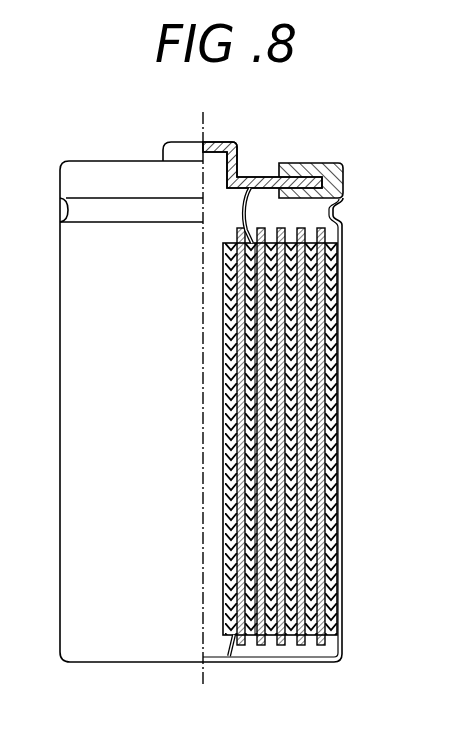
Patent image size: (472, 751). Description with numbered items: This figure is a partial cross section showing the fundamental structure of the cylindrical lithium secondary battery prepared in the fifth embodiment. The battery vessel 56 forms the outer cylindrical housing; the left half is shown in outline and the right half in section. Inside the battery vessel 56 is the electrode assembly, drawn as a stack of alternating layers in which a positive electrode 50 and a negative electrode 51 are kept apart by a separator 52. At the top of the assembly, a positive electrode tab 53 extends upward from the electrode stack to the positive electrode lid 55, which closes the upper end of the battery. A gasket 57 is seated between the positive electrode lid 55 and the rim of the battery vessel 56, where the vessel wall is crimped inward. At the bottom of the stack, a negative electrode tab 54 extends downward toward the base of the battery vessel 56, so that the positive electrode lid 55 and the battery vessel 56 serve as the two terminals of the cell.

The positive electrode 50 is at (291, 640).
The negative electrode 51 is at (313, 640).
The separator 52 is at (255, 645).
The positive electrode tab 53 is at (243, 207).
The negative electrode tab 54 is at (228, 641).
The positive electrode lid 55 is at (268, 177).
The battery vessel 56 is at (342, 338).
The gasket 57 is at (338, 163).